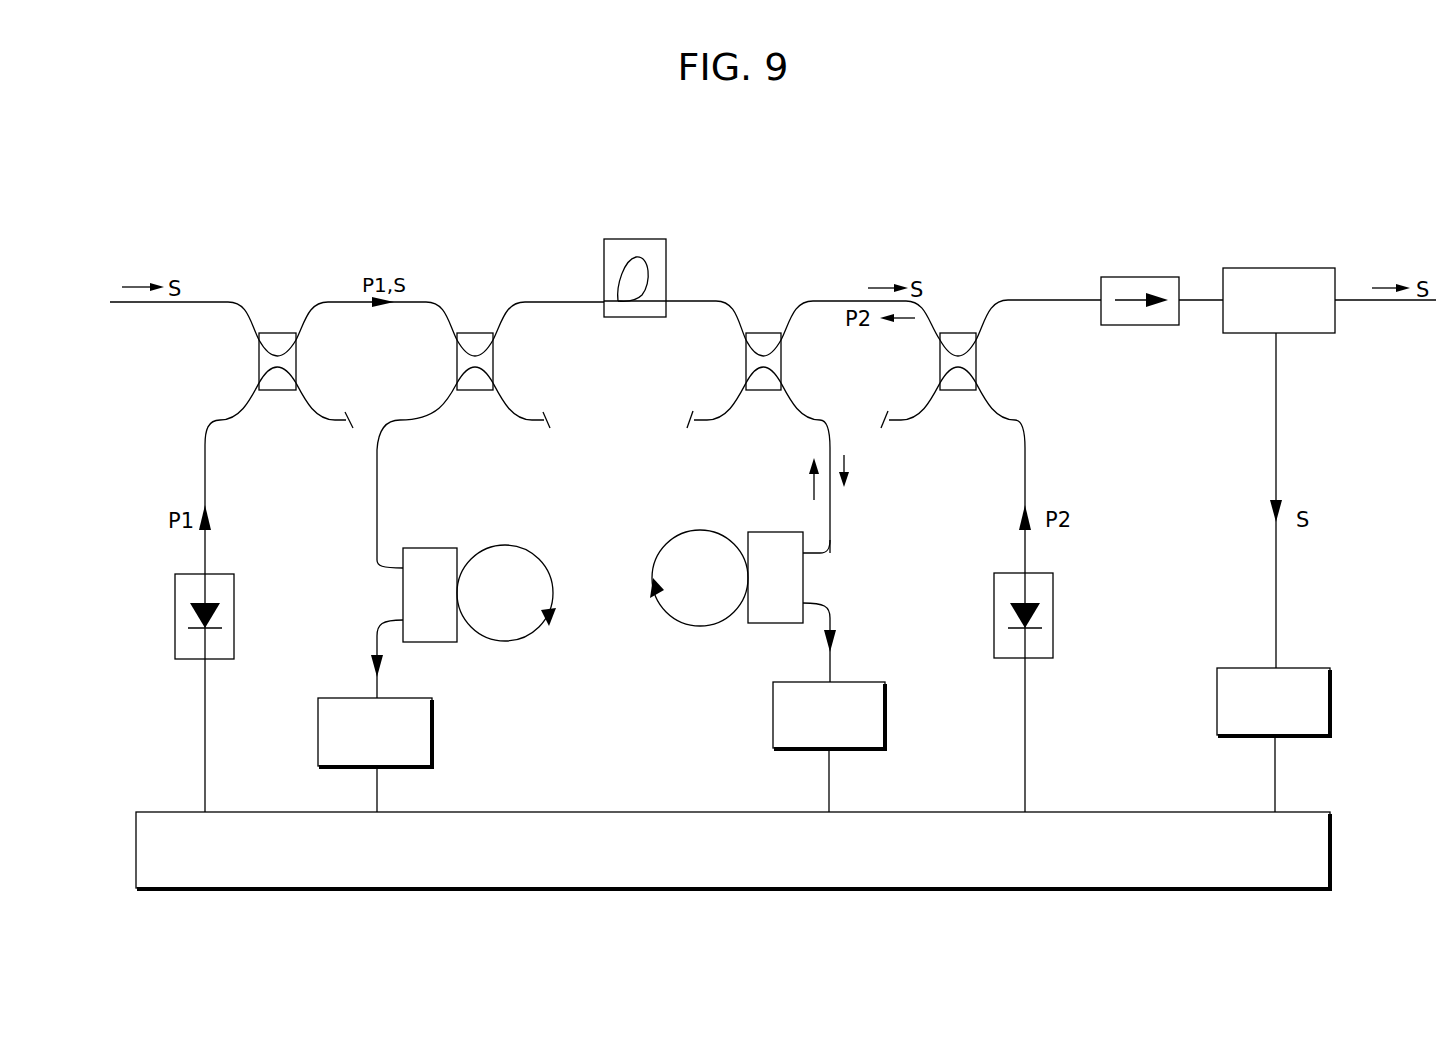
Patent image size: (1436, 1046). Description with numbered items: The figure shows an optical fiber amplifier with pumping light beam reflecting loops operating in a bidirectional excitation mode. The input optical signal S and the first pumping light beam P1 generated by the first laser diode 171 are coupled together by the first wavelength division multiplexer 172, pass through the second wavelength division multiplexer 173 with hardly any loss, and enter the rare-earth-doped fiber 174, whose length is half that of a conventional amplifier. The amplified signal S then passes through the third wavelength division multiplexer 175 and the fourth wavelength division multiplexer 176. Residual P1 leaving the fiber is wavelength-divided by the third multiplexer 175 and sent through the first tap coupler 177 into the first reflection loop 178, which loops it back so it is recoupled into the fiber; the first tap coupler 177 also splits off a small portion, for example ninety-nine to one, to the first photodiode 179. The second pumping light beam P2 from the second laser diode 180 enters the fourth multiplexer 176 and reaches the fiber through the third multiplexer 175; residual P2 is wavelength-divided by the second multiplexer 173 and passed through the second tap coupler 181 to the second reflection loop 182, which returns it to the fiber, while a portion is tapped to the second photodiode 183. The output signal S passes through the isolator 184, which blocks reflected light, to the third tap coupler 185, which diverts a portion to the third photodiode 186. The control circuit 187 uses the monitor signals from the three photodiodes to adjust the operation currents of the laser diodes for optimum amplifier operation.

The first laser diode 171 is at (175, 612).
The first wavelength division multiplexer 172 is at (277, 333).
The second wavelength division multiplexer 173 is at (475, 333).
The rare-earth-doped fiber 174 is at (637, 239).
The third wavelength division multiplexer 175 is at (763, 333).
The fourth wavelength division multiplexer 176 is at (957, 333).
The first tap coupler 177 is at (780, 532).
The first reflection loop 178 is at (688, 530).
The first photodiode 179 is at (773, 713).
The second laser diode 180 is at (1053, 618).
The second tap coupler 181 is at (428, 548).
The second reflection loop 182 is at (528, 548).
The second photodiode 183 is at (432, 732).
The isolator 184 is at (1143, 277).
The third tap coupler 185 is at (1278, 268).
The third photodiode 186 is at (1330, 702).
The control circuit 187 is at (611, 812).